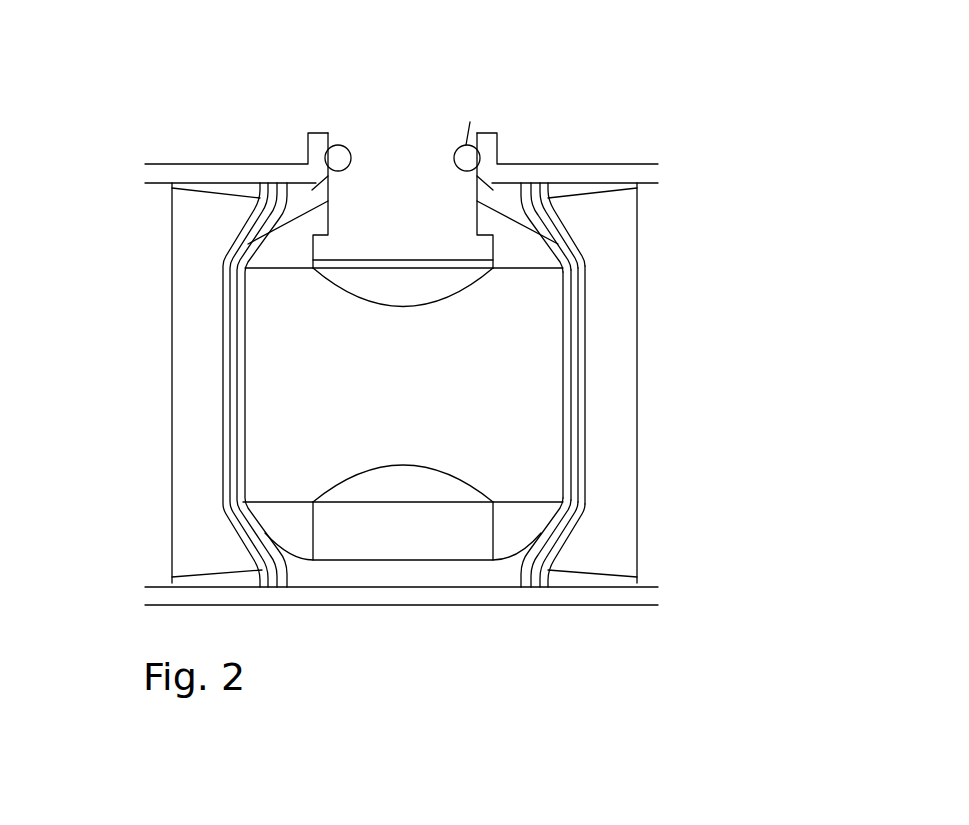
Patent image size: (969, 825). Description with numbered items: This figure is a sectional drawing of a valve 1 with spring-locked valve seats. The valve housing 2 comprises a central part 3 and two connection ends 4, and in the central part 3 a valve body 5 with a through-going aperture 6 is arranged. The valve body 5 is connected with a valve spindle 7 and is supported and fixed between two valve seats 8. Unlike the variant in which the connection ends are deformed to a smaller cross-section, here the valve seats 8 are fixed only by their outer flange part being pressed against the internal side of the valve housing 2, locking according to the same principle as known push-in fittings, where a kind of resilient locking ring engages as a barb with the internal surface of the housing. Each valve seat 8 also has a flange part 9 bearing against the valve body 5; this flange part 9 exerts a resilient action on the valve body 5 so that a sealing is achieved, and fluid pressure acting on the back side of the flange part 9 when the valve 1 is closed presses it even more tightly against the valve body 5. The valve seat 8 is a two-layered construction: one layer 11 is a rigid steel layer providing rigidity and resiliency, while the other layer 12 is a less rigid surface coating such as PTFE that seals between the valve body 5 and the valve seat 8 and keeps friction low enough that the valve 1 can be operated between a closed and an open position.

The valve 1 is at (139, 93).
The valve housing 2 is at (512, 177).
The central part 3 is at (368, 597).
The connection ends 4 is at (157, 597).
The valve body 5 is at (284, 515).
The through-going aperture 6 is at (421, 396).
The valve spindle 7 is at (419, 198).
The valve seat 8 is at (580, 390).
The flange part 9 is at (656, 385).
The steel layer 11 is at (560, 243).
The surface coating 12 is at (577, 527).